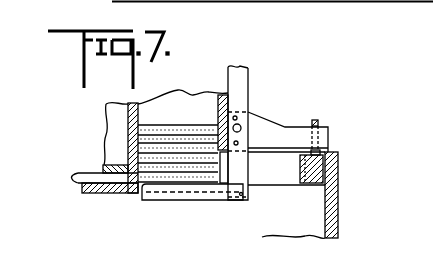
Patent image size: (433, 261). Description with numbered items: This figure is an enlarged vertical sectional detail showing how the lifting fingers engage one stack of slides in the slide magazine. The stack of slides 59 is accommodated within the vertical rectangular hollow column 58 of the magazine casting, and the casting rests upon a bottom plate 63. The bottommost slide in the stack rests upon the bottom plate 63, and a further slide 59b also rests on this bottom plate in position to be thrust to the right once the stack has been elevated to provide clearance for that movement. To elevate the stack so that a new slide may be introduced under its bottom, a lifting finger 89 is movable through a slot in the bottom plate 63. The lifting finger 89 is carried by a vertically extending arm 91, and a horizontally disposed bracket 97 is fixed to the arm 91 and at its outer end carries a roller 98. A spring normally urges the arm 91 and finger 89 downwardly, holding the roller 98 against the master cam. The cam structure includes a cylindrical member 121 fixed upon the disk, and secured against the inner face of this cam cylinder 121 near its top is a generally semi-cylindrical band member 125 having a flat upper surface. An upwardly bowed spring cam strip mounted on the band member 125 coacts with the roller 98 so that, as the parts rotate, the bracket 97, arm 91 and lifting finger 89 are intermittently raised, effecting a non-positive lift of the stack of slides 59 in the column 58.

The column 58 is at (110, 115).
The slides 59 is at (163, 133).
The slide 59b is at (75, 173).
The bottom plate 63 is at (108, 195).
The lifting fingers 89 is at (184, 200).
The arms 91 is at (248, 72).
The bracket 97 is at (284, 127).
The roller 98 is at (319, 121).
The band member 125 is at (324, 169).
The cylindrical member 121 is at (330, 212).